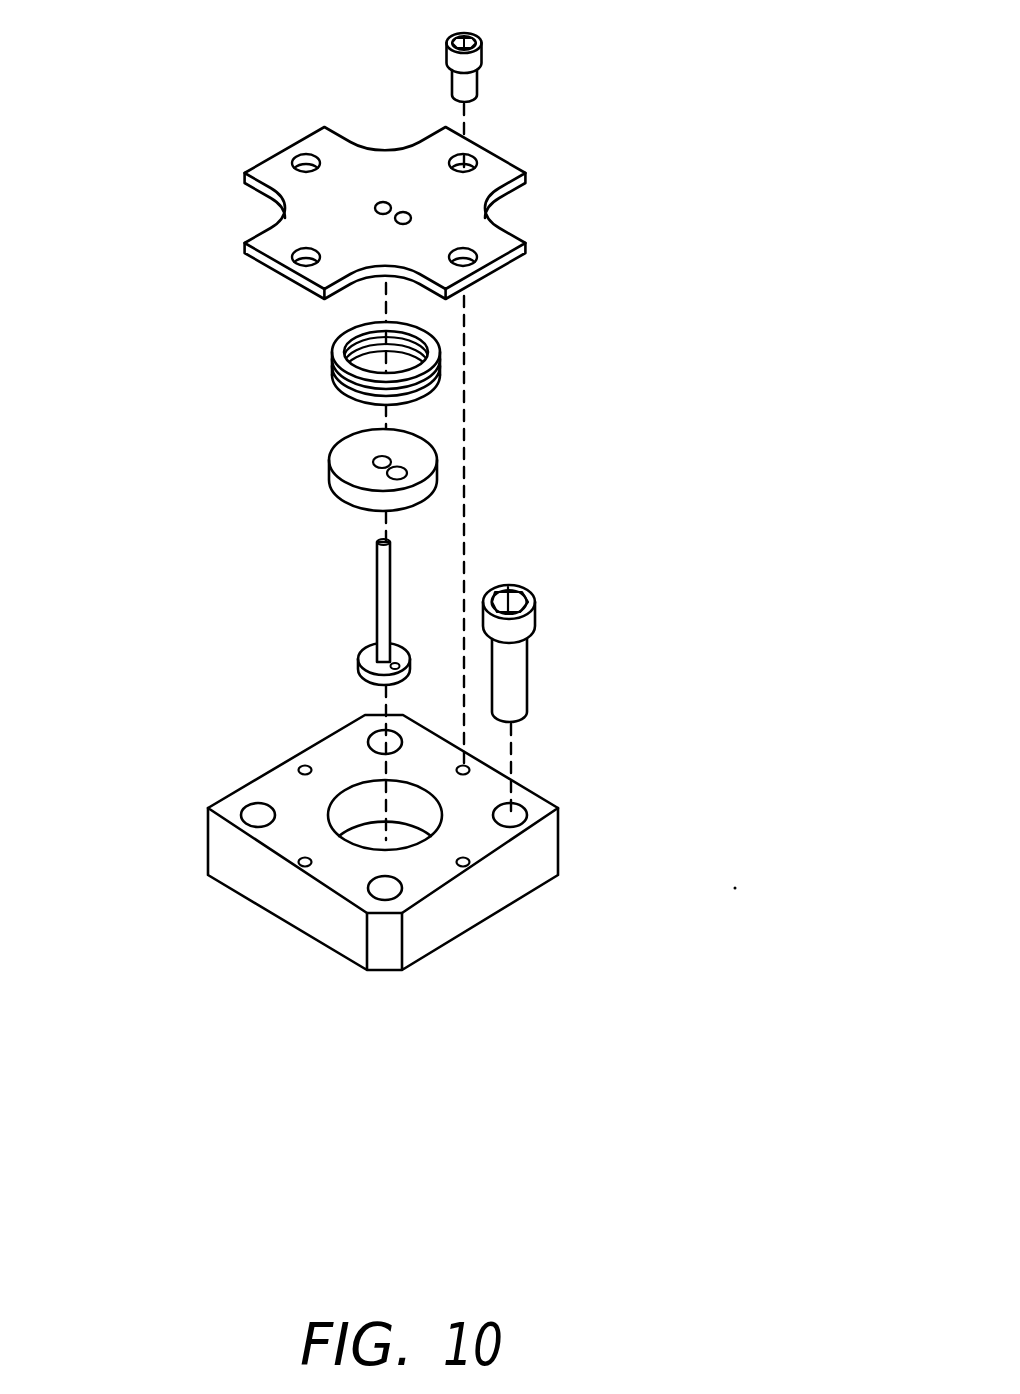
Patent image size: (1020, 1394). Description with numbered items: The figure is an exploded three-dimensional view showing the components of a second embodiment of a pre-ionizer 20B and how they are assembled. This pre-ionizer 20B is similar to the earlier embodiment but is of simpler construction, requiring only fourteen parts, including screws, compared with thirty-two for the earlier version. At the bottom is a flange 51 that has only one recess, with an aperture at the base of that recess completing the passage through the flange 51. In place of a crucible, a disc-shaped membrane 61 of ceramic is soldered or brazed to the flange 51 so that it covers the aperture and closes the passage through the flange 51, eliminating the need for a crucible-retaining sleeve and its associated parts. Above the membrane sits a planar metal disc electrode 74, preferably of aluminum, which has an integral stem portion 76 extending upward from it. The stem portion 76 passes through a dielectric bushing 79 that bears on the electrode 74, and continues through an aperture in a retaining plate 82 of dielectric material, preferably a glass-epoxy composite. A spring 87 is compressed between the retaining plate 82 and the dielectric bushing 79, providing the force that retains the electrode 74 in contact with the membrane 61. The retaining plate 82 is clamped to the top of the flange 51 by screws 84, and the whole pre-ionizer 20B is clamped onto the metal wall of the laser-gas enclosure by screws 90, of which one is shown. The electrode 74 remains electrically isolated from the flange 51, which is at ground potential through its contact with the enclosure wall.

The pre-ionizer 20B is at (650, 418).
The flange 51 is at (312, 814).
The disc-shaped membrane 61 is at (371, 836).
The disc electrode 74 is at (352, 652).
The stem portion 76 is at (376, 556).
The dielectric bushing 79 is at (328, 448).
The retaining plate 82 is at (397, 157).
The screws 84 is at (468, 87).
The spring 87 is at (323, 350).
The screws 90 is at (525, 620).